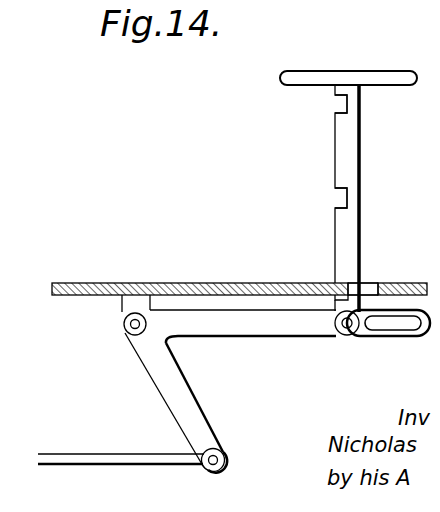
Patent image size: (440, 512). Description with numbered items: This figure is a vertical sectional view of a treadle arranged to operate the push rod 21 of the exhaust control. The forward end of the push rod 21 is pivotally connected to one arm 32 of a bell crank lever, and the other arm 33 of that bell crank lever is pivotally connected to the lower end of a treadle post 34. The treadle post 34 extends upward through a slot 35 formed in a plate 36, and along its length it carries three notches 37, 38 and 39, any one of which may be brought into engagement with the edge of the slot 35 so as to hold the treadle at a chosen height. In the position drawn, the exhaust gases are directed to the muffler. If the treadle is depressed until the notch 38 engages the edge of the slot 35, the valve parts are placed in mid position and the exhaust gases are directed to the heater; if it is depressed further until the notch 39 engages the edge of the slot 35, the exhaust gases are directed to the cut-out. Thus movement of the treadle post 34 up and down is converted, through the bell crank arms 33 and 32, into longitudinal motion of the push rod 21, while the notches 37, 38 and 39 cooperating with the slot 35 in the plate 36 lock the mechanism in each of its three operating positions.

The push rod 21 is at (137, 460).
The arm of bell crank lever 32 is at (193, 413).
The arm of bell crank lever 33 is at (241, 326).
The treadle post 34 is at (335, 158).
The slot 35 is at (369, 287).
The plate 36 is at (237, 277).
The notch 37 is at (335, 300).
The notch 38 is at (342, 199).
The notch 39 is at (345, 103).